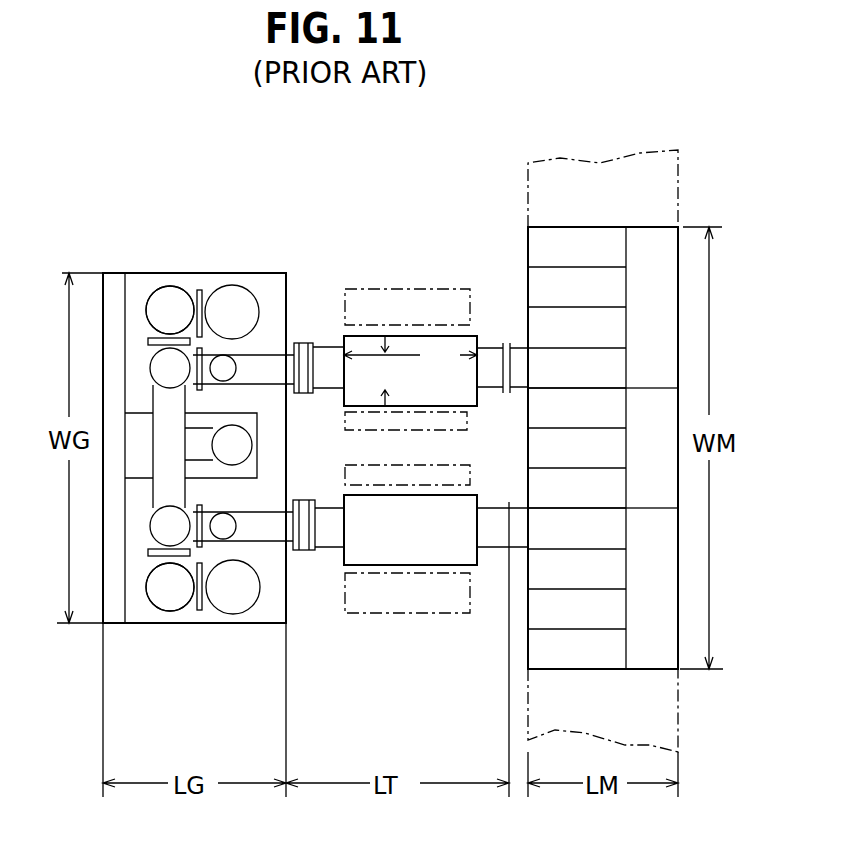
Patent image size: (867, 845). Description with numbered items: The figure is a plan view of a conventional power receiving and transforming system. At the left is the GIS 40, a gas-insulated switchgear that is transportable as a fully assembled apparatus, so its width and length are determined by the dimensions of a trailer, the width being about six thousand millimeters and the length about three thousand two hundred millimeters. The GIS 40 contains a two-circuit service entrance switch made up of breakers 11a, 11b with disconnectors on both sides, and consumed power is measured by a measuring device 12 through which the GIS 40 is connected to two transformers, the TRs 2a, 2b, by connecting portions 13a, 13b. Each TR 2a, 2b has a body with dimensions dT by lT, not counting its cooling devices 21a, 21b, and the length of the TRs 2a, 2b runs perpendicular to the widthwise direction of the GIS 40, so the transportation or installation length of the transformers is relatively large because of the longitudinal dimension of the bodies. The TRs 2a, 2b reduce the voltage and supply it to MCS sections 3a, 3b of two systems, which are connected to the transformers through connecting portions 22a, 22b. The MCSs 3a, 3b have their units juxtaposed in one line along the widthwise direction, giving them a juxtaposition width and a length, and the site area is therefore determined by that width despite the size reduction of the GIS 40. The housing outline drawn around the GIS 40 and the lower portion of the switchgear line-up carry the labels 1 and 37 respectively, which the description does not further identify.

The gear housing 1 is at (253, 275).
The GIS 40 is at (158, 281).
The breaker 11a is at (190, 278).
The breaker 11b is at (169, 620).
The measuring device 12 is at (254, 437).
The connecting portion 13a is at (303, 341).
The connecting portion 13b is at (305, 552).
The TR 2a is at (363, 334).
The TR 2b is at (370, 553).
The cooling device 21a is at (437, 289).
The cooling device 21b is at (363, 460).
The connecting portion 22a is at (504, 342).
The connecting portion 22b is at (488, 548).
The MCS 3a is at (527, 247).
The MCS 3b is at (528, 648).
The rack member 37 is at (660, 640).